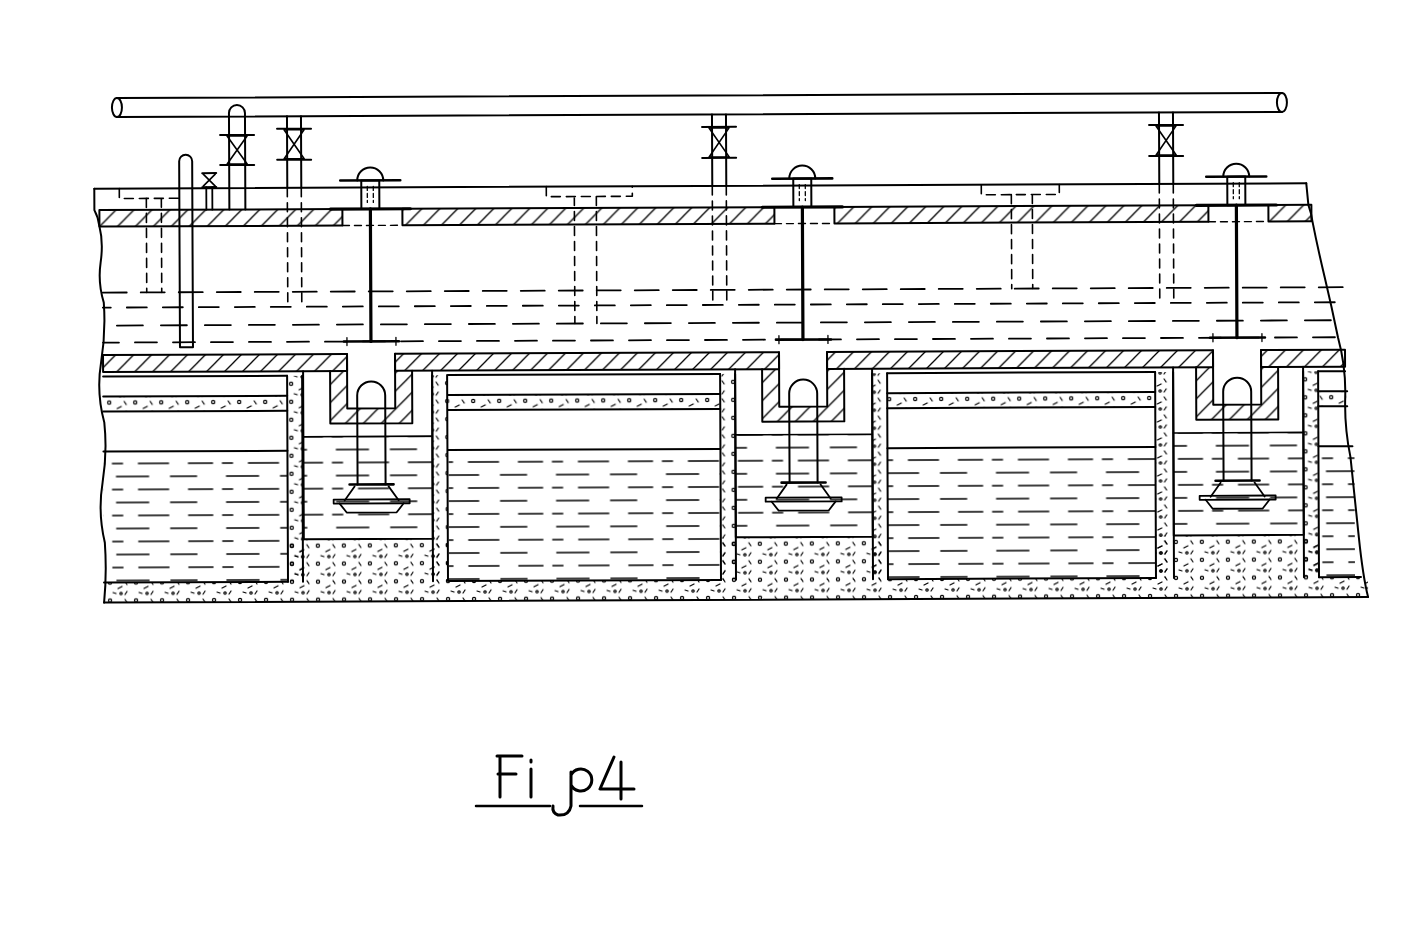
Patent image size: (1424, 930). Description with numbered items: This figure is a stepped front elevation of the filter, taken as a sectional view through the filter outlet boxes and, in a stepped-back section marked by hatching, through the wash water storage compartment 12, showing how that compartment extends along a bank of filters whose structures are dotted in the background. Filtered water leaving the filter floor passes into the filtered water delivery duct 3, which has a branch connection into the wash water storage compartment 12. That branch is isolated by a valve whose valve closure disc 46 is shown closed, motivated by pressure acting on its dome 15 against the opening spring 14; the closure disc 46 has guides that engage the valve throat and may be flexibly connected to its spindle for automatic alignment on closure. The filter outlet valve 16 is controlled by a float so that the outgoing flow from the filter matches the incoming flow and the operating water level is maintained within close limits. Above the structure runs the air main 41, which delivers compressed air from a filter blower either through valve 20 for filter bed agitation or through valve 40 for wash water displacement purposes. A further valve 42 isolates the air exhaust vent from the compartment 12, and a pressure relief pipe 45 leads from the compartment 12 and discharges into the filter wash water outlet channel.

The filtered water delivery duct 3 is at (330, 389).
The wash water storage compartment 12 is at (97, 224).
The opening spring 14 is at (385, 198).
The dome 15 is at (376, 166).
The filter outlet valve 16 is at (395, 500).
The valve 20 is at (303, 146).
The valve 40 is at (246, 148).
The air main 41 is at (1015, 95).
The valve 42 is at (207, 169).
The pressure relief pipe 45 is at (179, 179).
The valve closure disc 46 is at (376, 333).